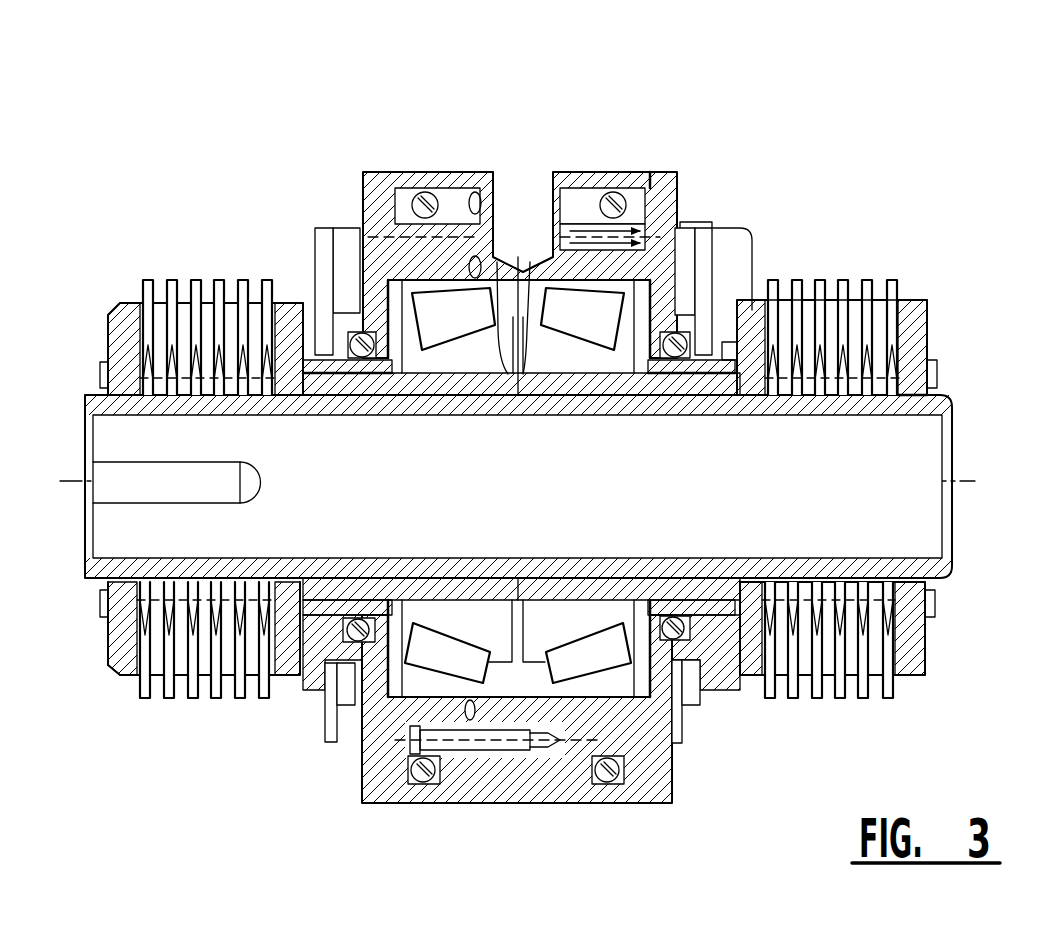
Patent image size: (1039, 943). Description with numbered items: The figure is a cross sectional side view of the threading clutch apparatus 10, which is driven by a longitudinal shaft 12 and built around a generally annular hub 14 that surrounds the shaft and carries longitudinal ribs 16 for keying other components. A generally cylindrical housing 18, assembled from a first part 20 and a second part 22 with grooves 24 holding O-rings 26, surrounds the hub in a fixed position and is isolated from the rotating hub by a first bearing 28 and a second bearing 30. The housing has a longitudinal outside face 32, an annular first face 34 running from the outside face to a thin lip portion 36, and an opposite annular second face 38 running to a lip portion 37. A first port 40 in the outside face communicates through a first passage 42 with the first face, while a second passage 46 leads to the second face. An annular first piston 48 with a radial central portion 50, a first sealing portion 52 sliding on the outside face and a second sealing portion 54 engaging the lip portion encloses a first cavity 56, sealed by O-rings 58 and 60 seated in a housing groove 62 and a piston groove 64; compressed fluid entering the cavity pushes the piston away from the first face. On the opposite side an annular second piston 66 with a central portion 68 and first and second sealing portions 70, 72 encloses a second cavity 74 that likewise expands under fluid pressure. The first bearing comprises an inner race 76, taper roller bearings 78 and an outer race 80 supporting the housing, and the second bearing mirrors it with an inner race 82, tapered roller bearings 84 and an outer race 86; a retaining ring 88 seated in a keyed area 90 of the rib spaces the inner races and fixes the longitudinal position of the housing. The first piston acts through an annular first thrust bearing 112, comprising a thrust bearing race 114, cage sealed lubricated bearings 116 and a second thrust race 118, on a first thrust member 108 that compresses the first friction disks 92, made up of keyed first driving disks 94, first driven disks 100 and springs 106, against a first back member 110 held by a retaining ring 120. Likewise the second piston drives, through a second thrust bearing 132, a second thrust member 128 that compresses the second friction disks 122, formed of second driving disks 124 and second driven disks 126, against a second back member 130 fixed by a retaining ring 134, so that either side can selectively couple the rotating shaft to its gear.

The threading clutch apparatus 10 is at (212, 182).
The shaft 12 is at (922, 458).
The hub 14 is at (900, 560).
The ribs 16 is at (96, 592).
The housing 18 is at (400, 255).
The first part 20 is at (592, 172).
The second part 22 is at (458, 188).
The grooves 24 is at (455, 760).
The O-rings 26 is at (476, 782).
The first bearing 28 is at (566, 180).
The second bearing 30 is at (421, 194).
The outside face 32 is at (540, 803).
The first face 34 is at (672, 775).
The lip portion 36 is at (668, 392).
The lip portion 37 is at (285, 300).
The second face 38 is at (372, 778).
The first port 40 is at (492, 172).
The first passage 42 is at (603, 172).
The second passage 46 is at (422, 262).
The first piston 48 is at (657, 175).
The central portion 50 is at (667, 755).
The first sealing portion 52 is at (592, 790).
The second sealing portion 54 is at (683, 648).
The first cavity 56 is at (700, 245).
The O-ring 58 is at (627, 175).
The O-ring 60 is at (300, 355).
The groove 62 is at (618, 176).
The groove 64 is at (740, 342).
The second piston 66 is at (345, 766).
The central portion 68 is at (370, 748).
The first sealing portion 70 is at (420, 786).
The second sealing portion 72 is at (325, 345).
The second cavity 74 is at (410, 262).
The inner race 76 is at (546, 290).
The taper roller bearings 78 is at (680, 225).
The outer race 80 is at (667, 262).
The inner race 82 is at (365, 356).
The tapered roller bearings 84 is at (333, 358).
The outer race 86 is at (360, 335).
The retaining ring 88 is at (512, 610).
The keyed area 90 is at (518, 300).
The first friction disks 92 is at (852, 264).
The first driving disk 94 is at (880, 300).
The first driven disk 100 is at (900, 290).
The springs 106 is at (853, 327).
The first thrust member 108 is at (748, 356).
The first back member 110 is at (912, 365).
The first thrust bearing 112 is at (707, 233).
The thrust bearing race 114 is at (690, 235).
The bearings 116 is at (688, 265).
The second thrust race 118 is at (720, 250).
The retaining ring 120 is at (940, 376).
The second friction disks 122 is at (240, 770).
The second driving disks 124 is at (172, 695).
The second driven disks 126 is at (146, 700).
The second thrust member 128 is at (296, 672).
The second back member 130 is at (122, 665).
The second thrust bearing 132 is at (343, 250).
The retaining ring 134 is at (105, 602).